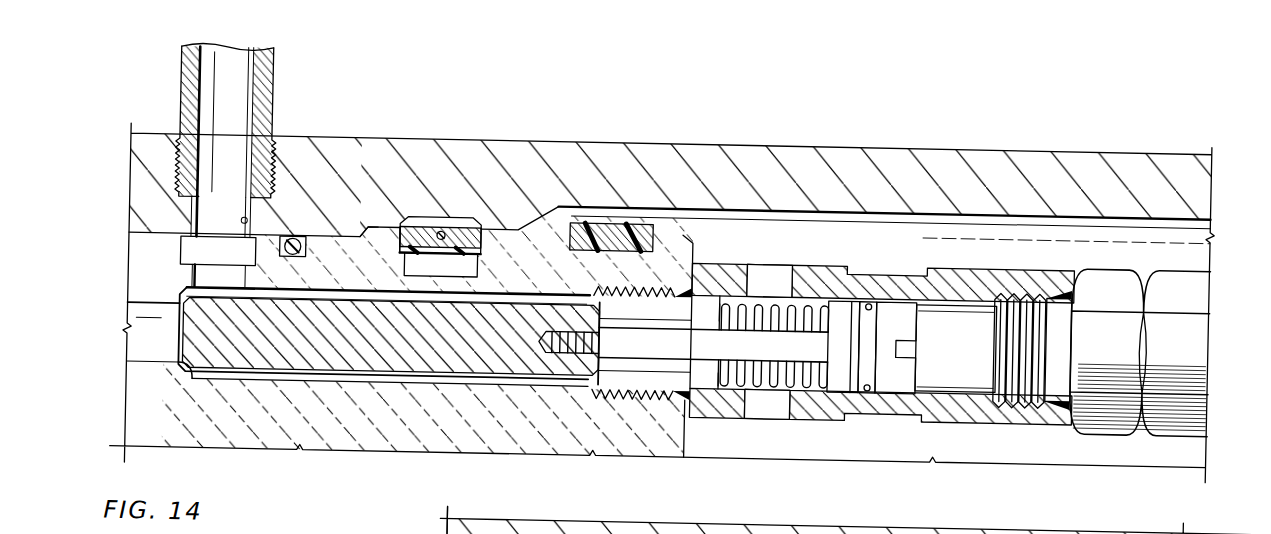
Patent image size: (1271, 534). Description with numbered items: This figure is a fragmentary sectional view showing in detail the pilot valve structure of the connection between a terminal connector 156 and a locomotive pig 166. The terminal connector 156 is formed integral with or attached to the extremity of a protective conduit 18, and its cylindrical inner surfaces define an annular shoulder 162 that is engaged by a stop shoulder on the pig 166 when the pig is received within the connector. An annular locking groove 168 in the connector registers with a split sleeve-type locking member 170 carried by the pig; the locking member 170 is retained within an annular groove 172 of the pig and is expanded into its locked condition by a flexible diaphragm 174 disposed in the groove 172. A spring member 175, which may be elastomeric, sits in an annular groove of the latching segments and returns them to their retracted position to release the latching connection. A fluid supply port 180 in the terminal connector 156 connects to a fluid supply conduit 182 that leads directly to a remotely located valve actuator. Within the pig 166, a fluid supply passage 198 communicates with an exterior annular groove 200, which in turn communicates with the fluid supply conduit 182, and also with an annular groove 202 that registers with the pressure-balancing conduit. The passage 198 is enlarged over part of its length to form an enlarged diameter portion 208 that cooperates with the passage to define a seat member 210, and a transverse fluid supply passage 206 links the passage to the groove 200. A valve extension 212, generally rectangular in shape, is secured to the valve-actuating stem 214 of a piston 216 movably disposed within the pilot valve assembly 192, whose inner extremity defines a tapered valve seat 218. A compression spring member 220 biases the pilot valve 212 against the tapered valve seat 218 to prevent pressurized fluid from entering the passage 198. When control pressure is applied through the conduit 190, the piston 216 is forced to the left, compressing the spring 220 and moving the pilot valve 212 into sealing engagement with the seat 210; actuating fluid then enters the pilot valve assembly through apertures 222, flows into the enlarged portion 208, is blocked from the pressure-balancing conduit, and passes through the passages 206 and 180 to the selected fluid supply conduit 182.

The protective conduit 18 is at (1028, 137).
The terminal connector 156 is at (375, 147).
The annular shoulder 162 is at (380, 218).
The locomotive pig 166 is at (580, 218).
The annular locking groove 168 is at (447, 212).
The split sleeve-type locking member 170 is at (557, 231).
The annular groove 172 is at (425, 288).
The flexible diaphragm 174 is at (470, 250).
The spring member 175 is at (405, 239).
The fluid supply port 180 is at (247, 223).
The fluid supply conduit 182 is at (261, 65).
The control pressure conduit 190 is at (1198, 276).
The pilot valve assembly 192 is at (984, 256).
The fluid supply passage 198 is at (141, 357).
The annular groove 200 is at (192, 249).
The annular groove 202 is at (503, 526).
The transverse fluid supply passage 206 is at (196, 276).
The enlarged diameter portion 208 is at (348, 377).
The seat member 210 is at (197, 381).
The valve extension 212 is at (288, 357).
The valve-actuating stem 214 is at (704, 302).
The piston 216 is at (853, 366).
The tapered valve seat 218 is at (598, 368).
The compression spring member 220 is at (816, 286).
The aperture 222 is at (782, 264).